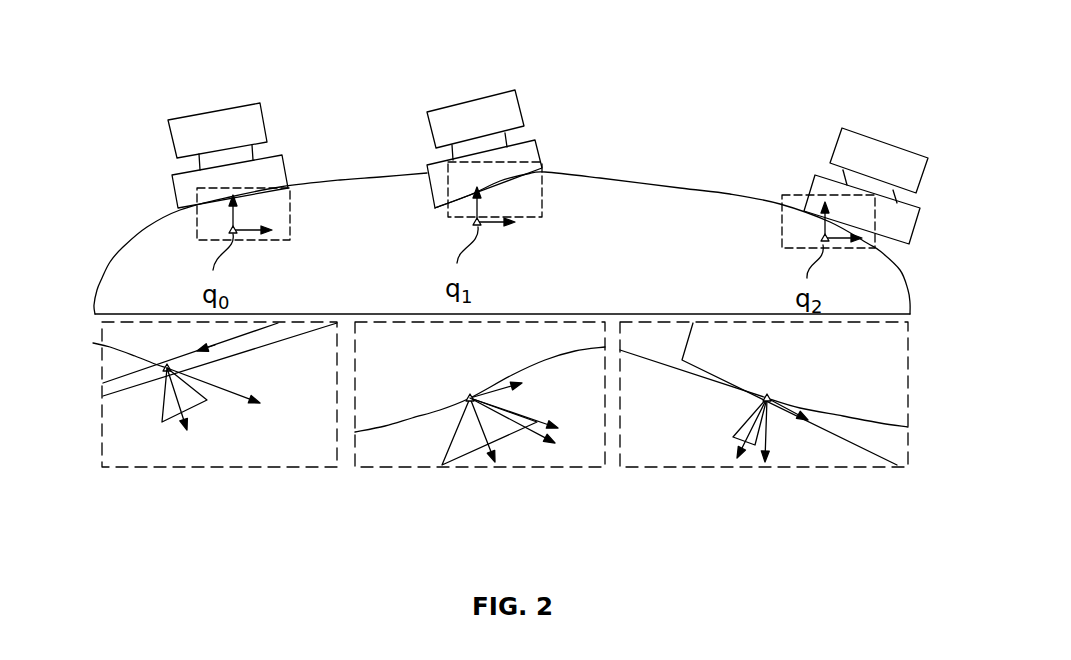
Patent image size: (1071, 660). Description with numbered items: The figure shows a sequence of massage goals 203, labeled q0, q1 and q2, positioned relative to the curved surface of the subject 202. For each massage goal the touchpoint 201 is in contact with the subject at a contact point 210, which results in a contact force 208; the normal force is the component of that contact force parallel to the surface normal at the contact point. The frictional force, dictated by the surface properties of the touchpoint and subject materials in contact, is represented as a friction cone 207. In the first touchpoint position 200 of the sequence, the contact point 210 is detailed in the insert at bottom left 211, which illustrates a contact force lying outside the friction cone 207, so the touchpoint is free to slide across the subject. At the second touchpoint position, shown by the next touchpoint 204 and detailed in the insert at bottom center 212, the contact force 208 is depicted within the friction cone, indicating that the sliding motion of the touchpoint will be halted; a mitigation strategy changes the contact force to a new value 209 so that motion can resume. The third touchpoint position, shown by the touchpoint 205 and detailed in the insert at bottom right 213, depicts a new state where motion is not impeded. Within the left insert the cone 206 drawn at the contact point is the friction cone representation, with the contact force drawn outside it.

The first touchpoint position 200 is at (217, 110).
The touchpoint 201 is at (180, 173).
The subject 202 is at (147, 250).
The massage goals 203 is at (148, 275).
The robot at second position 204 is at (472, 100).
The robot at third position 205 is at (885, 138).
The normal vector cone 206 is at (160, 397).
The friction cone 207 is at (170, 420).
The contact force 208 is at (227, 393).
The new contact force value 209 is at (538, 435).
The contact point 210 is at (100, 345).
The bottom left insert 211 is at (335, 507).
The bottom center insert 212 is at (458, 507).
The bottom right insert 213 is at (786, 506).